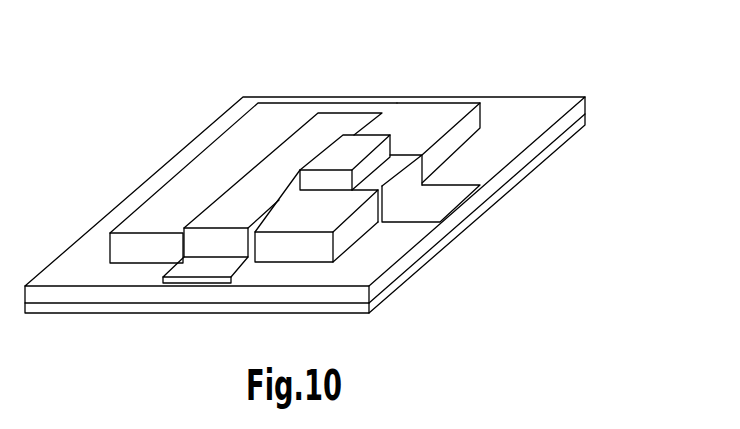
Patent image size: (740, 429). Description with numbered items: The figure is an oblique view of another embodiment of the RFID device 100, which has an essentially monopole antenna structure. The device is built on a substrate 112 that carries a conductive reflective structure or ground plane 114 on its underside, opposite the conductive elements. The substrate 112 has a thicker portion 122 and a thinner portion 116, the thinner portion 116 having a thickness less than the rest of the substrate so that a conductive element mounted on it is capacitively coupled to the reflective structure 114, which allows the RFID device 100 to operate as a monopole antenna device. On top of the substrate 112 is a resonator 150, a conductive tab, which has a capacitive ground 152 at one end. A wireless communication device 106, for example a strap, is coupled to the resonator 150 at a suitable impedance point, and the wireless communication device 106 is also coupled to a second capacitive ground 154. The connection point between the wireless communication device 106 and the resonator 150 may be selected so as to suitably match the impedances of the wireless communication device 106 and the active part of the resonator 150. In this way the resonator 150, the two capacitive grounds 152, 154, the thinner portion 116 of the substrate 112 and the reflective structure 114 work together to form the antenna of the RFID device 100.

The RFID device 100 is at (346, 192).
The wireless communication device 106 is at (373, 145).
The substrate 112 is at (346, 172).
The reflective structure 114 is at (563, 143).
The thinner portion 116 is at (544, 117).
The thicker portion 122 is at (462, 107).
The resonator 150 is at (272, 149).
The capacitive ground 152 is at (198, 270).
The capacitive ground 154 is at (443, 196).